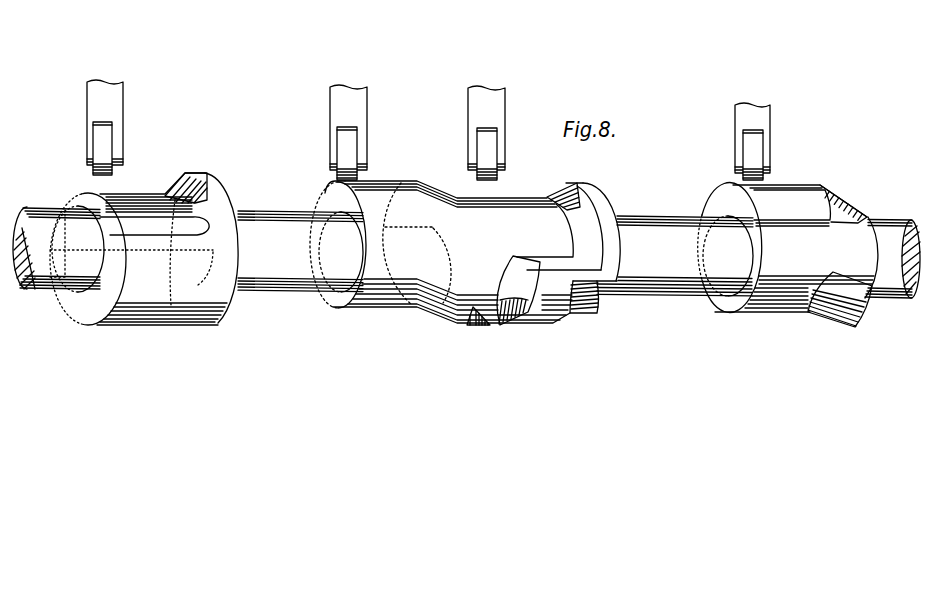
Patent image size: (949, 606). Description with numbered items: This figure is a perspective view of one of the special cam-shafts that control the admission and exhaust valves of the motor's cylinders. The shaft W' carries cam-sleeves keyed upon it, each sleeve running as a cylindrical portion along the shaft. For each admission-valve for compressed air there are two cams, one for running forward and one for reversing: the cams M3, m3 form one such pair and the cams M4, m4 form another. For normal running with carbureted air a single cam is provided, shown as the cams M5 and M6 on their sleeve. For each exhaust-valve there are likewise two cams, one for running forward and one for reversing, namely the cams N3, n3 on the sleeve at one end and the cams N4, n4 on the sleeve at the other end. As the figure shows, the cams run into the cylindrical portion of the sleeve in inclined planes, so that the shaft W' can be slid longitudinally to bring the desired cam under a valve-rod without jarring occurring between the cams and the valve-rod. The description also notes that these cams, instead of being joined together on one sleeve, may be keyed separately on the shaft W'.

The shaft W' is at (466, 252).
The exhaust-valve cam N4 is at (212, 180).
The exhaust-valve cam n4 is at (87, 249).
The normal-running cam M6 is at (442, 310).
The compressed-air admission cam m4 is at (392, 186).
The compressed-air admission cam M4 is at (402, 228).
The normal-running cam M5 is at (609, 217).
The compressed-air admission cam M3 is at (518, 290).
The compressed-air admission cam m3 is at (485, 316).
The exhaust-valve cam n3 is at (788, 248).
The exhaust-valve cam N3 is at (857, 282).